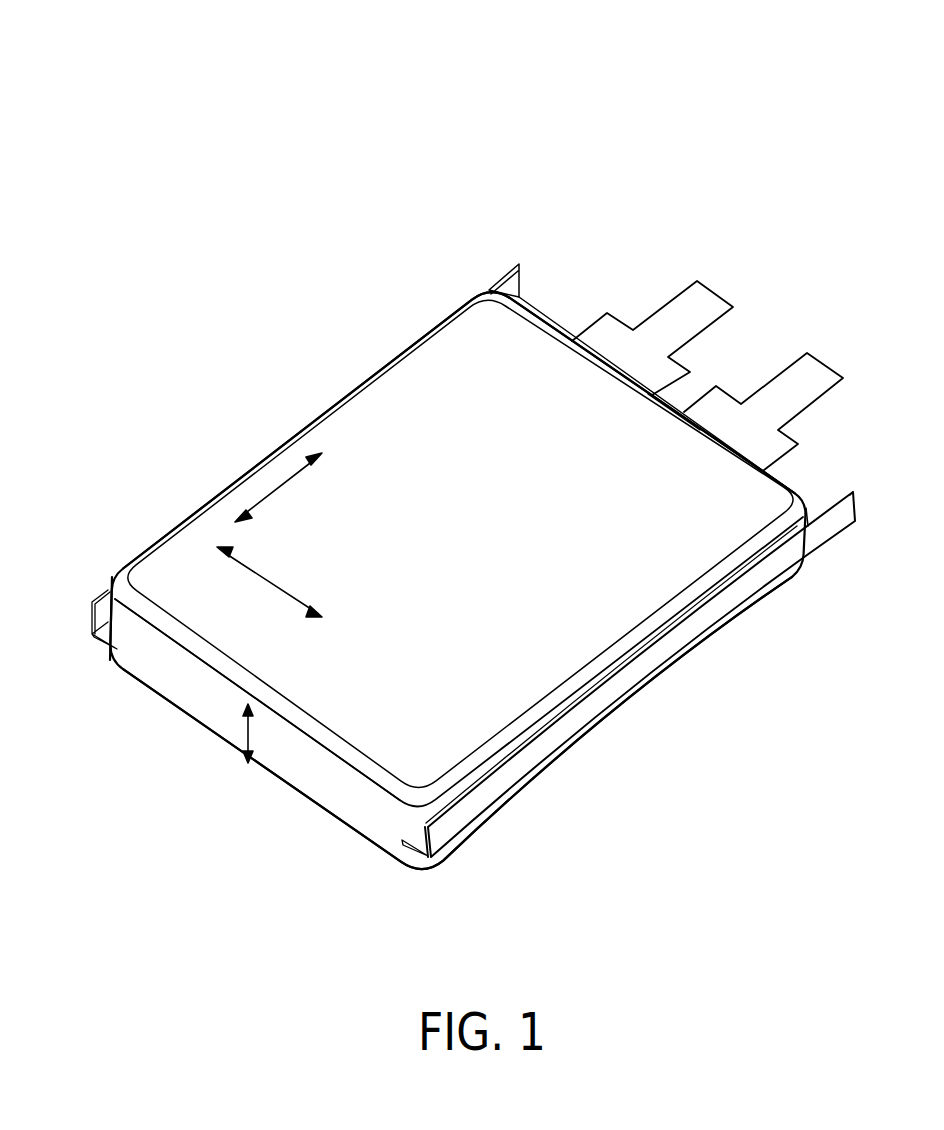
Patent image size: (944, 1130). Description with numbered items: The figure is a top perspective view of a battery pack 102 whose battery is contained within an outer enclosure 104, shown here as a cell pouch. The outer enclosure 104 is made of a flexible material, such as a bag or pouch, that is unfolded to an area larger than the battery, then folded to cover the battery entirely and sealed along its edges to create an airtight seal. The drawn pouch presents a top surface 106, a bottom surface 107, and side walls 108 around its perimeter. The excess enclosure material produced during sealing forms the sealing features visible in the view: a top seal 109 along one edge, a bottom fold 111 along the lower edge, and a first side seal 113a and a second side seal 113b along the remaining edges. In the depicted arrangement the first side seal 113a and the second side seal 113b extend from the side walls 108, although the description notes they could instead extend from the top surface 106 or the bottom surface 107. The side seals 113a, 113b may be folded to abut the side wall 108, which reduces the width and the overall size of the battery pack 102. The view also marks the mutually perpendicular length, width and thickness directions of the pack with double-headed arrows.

The battery pack 102 is at (106, 164).
The outer enclosure 104 is at (245, 474).
The top surface 106 is at (415, 420).
The bottom surface 107 is at (188, 725).
The side walls 108 is at (122, 563).
The top seal 109 is at (650, 392).
The bottom fold 111 is at (150, 680).
The first side seal 113a is at (511, 266).
The second side seal 113b is at (600, 708).